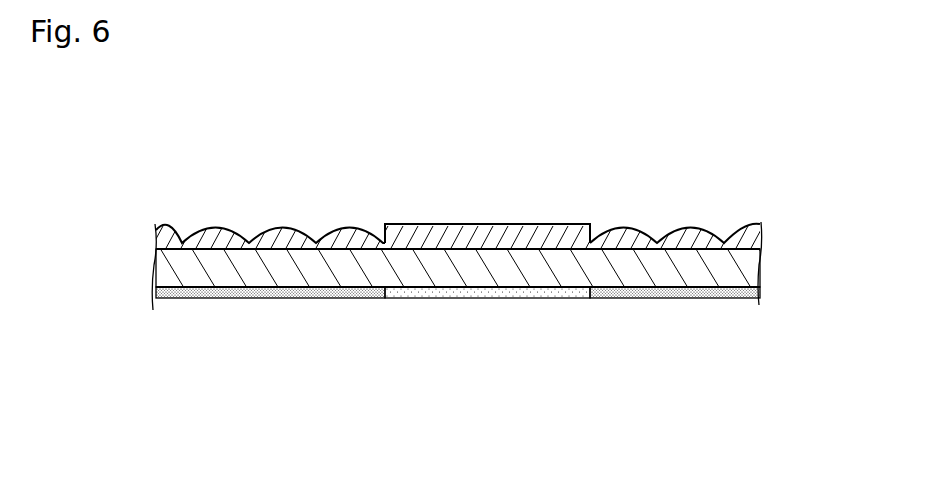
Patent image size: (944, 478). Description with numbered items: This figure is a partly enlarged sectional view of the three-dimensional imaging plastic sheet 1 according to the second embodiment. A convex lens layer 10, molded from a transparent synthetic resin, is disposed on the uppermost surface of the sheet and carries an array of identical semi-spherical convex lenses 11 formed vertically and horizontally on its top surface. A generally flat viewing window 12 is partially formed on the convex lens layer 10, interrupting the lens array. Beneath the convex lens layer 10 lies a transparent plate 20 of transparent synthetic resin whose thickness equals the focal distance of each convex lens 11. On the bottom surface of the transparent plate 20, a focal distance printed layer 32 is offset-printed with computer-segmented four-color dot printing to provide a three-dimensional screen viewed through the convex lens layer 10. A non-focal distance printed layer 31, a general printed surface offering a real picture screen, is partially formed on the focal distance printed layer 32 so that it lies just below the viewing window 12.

The three-dimensional plastic sheet 1 is at (760, 192).
The convex lens layer 10 is at (676, 228).
The convex lenses 11 is at (285, 237).
The viewing window 12 is at (518, 228).
The transparent plate 20 is at (170, 277).
The non-focal distance printed layer 31 is at (490, 290).
The focal distance printed layer 32 is at (322, 292).